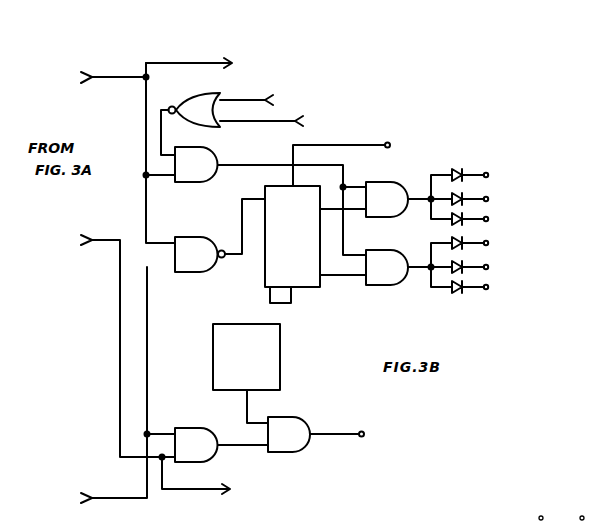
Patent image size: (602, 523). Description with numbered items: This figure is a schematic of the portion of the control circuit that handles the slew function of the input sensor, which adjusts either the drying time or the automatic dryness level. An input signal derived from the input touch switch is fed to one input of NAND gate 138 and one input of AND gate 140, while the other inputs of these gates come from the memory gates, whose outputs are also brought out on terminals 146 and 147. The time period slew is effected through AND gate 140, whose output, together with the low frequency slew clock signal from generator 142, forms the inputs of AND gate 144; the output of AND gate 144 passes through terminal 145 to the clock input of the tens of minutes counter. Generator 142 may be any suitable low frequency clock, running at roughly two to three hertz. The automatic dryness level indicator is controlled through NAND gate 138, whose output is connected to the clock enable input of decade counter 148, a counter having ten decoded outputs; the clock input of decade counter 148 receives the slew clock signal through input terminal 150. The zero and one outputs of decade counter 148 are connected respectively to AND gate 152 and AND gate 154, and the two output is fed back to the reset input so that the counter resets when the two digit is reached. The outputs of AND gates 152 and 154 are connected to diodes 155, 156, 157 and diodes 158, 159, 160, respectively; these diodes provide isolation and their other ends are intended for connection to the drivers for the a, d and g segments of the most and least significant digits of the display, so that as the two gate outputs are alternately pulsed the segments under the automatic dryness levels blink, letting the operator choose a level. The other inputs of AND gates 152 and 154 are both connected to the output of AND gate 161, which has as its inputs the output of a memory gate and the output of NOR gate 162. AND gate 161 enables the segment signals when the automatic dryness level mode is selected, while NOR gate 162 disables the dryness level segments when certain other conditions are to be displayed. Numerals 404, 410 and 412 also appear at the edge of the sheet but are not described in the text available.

The NAND gate 138 is at (198, 270).
The AND gate 140 is at (194, 437).
The generator 142 is at (268, 333).
The AND gate 144 is at (290, 447).
The terminal 145 is at (373, 419).
The terminal 146 is at (234, 64).
The terminal 147 is at (232, 490).
The decade counter 148 is at (275, 255).
The input terminal 150 is at (394, 136).
The AND gate 152 is at (396, 185).
The AND gate 154 is at (392, 253).
The diode 155 is at (466, 173).
The diode 156 is at (456, 197).
The diode 157 is at (468, 217).
The diode 158 is at (455, 268).
The diode 159 is at (464, 279).
The diode 160 is at (465, 293).
The AND gate 161 is at (201, 186).
The NOR gate 162 is at (195, 100).
The element (adjacent figure) 404 is at (428, 517).
The element (adjacent figure) 410 is at (542, 510).
The element (adjacent figure) 412 is at (582, 510).